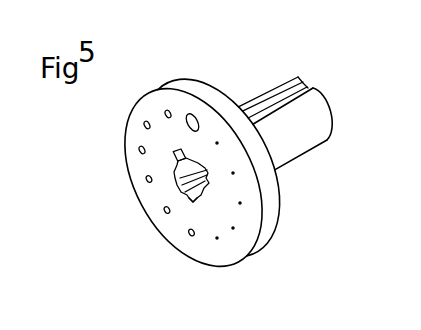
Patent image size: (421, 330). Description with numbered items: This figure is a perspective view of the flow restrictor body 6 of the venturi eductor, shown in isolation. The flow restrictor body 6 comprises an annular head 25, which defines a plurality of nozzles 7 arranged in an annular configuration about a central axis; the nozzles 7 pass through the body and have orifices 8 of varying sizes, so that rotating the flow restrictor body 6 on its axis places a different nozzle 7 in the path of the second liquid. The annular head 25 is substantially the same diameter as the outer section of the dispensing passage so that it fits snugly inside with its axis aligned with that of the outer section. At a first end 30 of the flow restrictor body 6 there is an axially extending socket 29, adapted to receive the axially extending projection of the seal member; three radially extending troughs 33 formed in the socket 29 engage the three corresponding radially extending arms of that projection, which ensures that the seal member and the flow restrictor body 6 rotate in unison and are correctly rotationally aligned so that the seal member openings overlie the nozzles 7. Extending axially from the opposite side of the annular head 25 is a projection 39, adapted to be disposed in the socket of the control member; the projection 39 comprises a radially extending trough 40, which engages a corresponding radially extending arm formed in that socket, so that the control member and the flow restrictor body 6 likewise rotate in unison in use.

The flow restrictor body 6 is at (240, 33).
The annular head 25 is at (170, 80).
The first end 30 is at (131, 177).
The nozzles 7 is at (138, 150).
The orifice 8 is at (144, 124).
The socket 29 is at (185, 180).
The radially extending troughs 33 is at (193, 201).
The projection 39 is at (331, 138).
The radially extending trough 40 is at (306, 88).